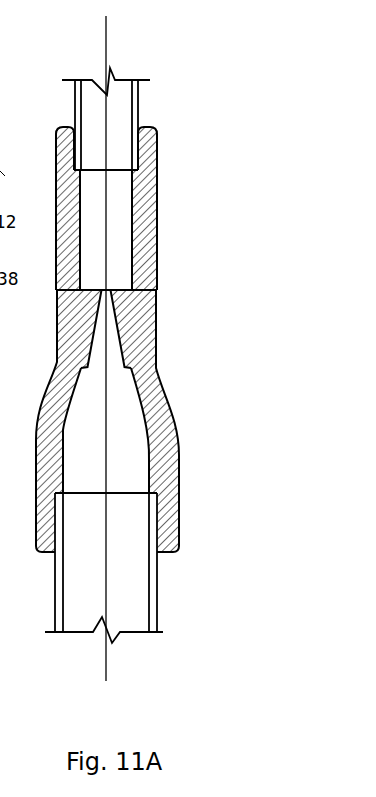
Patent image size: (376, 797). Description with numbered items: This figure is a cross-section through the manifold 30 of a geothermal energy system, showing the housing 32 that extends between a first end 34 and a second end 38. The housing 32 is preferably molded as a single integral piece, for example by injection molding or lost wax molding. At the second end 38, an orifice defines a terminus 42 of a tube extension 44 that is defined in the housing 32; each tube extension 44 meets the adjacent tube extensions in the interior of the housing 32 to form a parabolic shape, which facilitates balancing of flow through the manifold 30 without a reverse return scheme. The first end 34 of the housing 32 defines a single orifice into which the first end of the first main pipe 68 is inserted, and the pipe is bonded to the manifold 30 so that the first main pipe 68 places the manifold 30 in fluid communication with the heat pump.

The manifold 30 is at (166, 377).
The housing 32 is at (158, 325).
The first end 34 is at (181, 513).
The second end 38 is at (161, 171).
The terminus 42 is at (137, 143).
The tube extension 44 is at (136, 216).
The first main pipe 68 is at (159, 583).